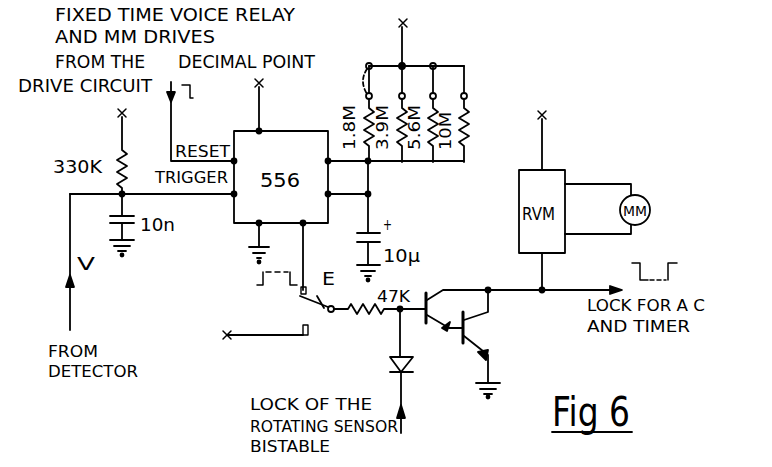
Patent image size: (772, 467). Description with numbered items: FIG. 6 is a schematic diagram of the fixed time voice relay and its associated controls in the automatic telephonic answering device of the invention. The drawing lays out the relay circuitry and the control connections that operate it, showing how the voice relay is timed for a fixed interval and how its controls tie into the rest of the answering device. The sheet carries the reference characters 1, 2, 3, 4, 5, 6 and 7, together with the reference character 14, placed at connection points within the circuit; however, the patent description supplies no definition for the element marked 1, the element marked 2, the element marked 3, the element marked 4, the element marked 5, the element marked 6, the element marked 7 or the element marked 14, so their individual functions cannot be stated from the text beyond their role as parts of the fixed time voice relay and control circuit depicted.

The 556 timer pin 1 / selector position 1 (1.8M resistor) 1 is at (388, 119).
The 556 timer pin 2 / selector position 2 (3.9M resistor) 2 is at (358, 111).
The selector position 3 (5.6M resistor) 3 is at (433, 112).
The 556 timer pin 4 reset / selector position 4 (10M resistor) 4 is at (349, 121).
The 556 timer pin 5 is at (302, 246).
The 556 timer pin 6 trigger 6 is at (241, 194).
The 556 timer pin 7 (ground) 7 is at (259, 233).
The 556 timer pin 14 supply 14 is at (265, 118).